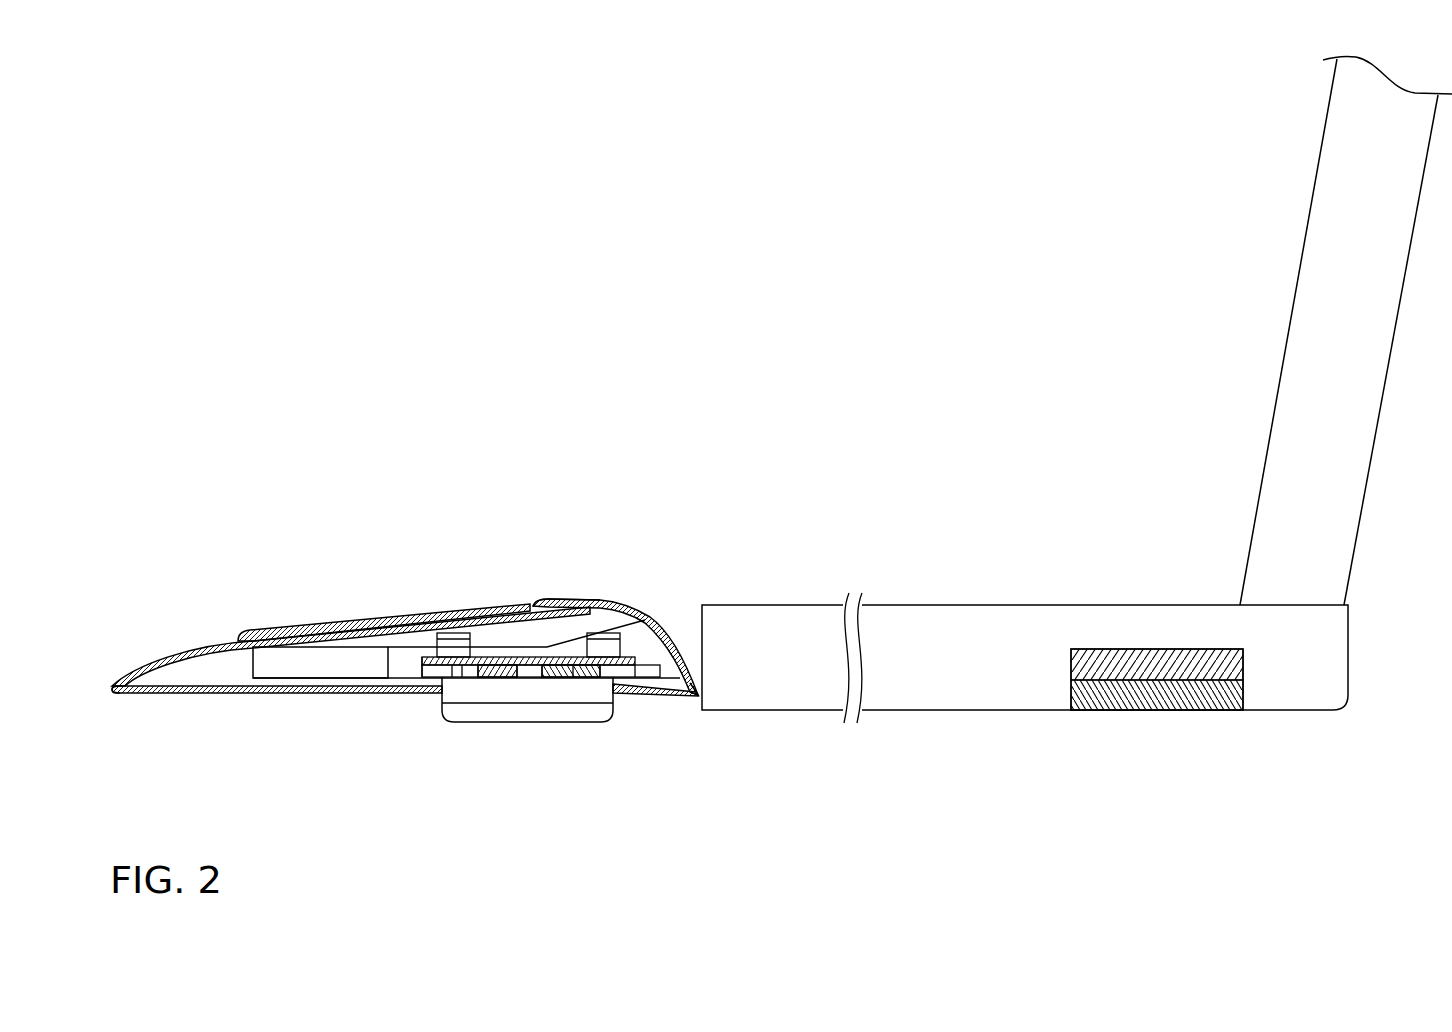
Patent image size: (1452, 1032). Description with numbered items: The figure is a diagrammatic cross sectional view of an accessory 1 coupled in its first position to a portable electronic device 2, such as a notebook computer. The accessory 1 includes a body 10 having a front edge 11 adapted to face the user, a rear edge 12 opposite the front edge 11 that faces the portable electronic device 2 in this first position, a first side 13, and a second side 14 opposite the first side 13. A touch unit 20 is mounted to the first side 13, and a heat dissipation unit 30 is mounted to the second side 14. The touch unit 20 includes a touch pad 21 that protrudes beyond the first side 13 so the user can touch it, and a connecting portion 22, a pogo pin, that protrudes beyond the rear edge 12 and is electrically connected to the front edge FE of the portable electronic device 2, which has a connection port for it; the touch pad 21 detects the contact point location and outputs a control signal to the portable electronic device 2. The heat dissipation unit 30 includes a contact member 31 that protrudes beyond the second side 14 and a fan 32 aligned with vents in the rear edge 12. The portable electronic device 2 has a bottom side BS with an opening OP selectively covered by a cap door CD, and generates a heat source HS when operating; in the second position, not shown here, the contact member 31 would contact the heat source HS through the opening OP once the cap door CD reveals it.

The accessory 1 is at (337, 590).
The portable electronic device 2 is at (1392, 362).
The body 10 is at (165, 648).
The front edge 11 is at (110, 702).
The rear edge 12 is at (662, 620).
The first side 13 is at (605, 600).
The second side 14 is at (620, 702).
The touch unit 20 is at (418, 615).
The touch pad 21 is at (483, 608).
The connecting portion 22 is at (698, 667).
The heat dissipation unit 30 is at (488, 726).
The contact member 31 is at (550, 708).
The fan 32 is at (643, 642).
The front edge FE is at (699, 702).
The bottom side BS is at (900, 713).
The heat source HS is at (1101, 685).
The cap door CD is at (1163, 695).
The opening OP is at (1243, 692).